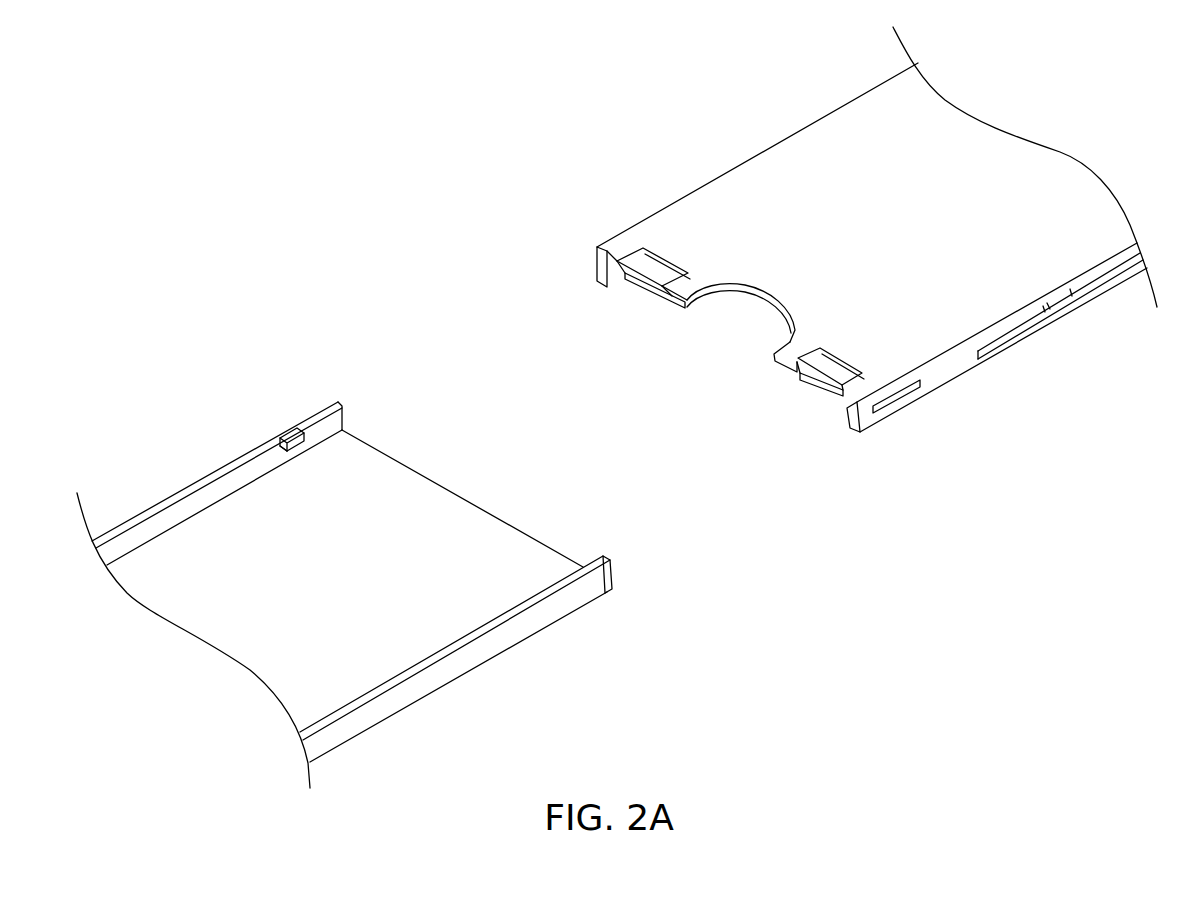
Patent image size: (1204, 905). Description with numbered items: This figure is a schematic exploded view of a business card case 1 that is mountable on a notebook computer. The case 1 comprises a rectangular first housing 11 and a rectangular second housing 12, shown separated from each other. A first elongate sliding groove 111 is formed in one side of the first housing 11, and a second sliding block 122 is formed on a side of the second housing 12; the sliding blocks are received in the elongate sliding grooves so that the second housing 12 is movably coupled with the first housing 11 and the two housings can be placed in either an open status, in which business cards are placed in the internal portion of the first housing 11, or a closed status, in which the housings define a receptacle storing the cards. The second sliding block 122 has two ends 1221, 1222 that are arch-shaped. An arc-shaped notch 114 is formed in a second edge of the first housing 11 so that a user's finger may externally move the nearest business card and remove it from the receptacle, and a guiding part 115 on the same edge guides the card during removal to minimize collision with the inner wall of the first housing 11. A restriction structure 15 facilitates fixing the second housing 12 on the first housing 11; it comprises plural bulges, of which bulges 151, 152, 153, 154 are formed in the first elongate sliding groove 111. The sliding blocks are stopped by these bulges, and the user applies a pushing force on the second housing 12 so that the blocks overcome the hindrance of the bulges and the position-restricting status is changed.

The business card case 1 is at (218, 101).
The first housing 11 is at (822, 155).
The first elongate sliding groove 111 is at (983, 348).
The arc-shaped notch 114 is at (773, 298).
The guiding part 115 is at (642, 287).
The second housing 12 is at (467, 598).
The second sliding block 122 is at (292, 432).
The end of second sliding block 1221 is at (343, 407).
The end of second sliding block 1222 is at (278, 453).
The restriction structure 15 is at (1053, 283).
The bulge 151 is at (1093, 282).
The bulge 152 is at (1075, 292).
The bulge 153 is at (1050, 305).
The bulge 154 is at (920, 384).